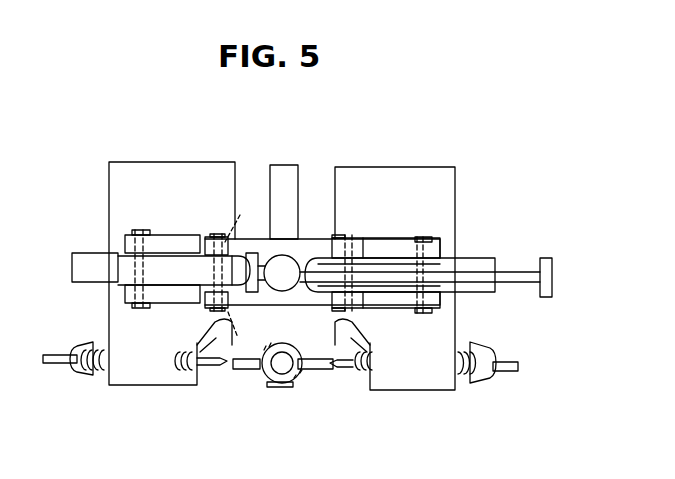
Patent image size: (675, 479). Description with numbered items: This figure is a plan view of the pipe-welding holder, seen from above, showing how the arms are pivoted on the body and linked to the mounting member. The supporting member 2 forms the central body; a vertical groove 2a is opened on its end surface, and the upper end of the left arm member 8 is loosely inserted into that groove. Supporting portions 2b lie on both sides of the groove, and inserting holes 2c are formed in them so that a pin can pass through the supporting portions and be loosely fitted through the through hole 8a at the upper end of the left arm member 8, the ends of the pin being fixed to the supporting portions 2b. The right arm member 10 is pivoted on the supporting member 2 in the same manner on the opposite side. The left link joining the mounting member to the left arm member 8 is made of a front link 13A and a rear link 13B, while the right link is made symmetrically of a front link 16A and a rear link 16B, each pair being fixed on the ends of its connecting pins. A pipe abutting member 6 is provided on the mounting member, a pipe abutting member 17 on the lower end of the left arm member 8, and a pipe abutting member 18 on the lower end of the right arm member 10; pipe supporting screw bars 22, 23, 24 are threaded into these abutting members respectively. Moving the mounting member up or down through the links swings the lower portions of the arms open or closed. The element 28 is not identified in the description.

The supporting member 2 is at (307, 238).
The vertical groove 2a is at (196, 290).
The supporting portions 2b is at (200, 240).
The inserting holes 2c is at (242, 265).
The pipe abutting member 6 is at (285, 163).
The left arm member 8 is at (82, 258).
The through hole 8a is at (217, 353).
The right arm member 10 is at (472, 263).
The front link 13A is at (125, 290).
The rear link 13B is at (160, 235).
The front link 16A is at (390, 305).
The rear link 16B is at (390, 242).
The pipe abutting member 17 is at (137, 163).
The pipe abutting member 18 is at (443, 170).
The pipe supporting screw bar 22 is at (295, 377).
The pipe supporting screw bar 23 is at (92, 372).
The pipe supporting screw bar 24 is at (462, 348).
The shaft head 28 is at (516, 272).